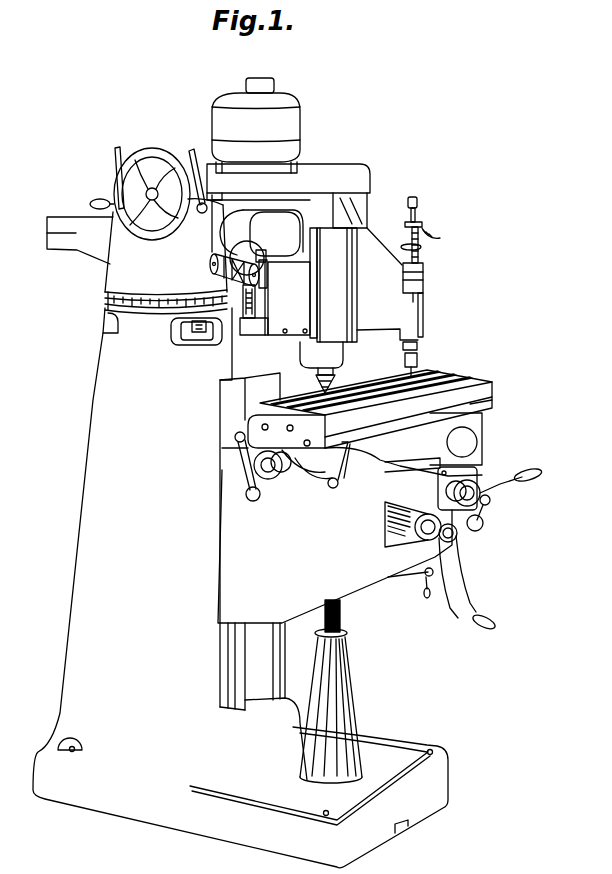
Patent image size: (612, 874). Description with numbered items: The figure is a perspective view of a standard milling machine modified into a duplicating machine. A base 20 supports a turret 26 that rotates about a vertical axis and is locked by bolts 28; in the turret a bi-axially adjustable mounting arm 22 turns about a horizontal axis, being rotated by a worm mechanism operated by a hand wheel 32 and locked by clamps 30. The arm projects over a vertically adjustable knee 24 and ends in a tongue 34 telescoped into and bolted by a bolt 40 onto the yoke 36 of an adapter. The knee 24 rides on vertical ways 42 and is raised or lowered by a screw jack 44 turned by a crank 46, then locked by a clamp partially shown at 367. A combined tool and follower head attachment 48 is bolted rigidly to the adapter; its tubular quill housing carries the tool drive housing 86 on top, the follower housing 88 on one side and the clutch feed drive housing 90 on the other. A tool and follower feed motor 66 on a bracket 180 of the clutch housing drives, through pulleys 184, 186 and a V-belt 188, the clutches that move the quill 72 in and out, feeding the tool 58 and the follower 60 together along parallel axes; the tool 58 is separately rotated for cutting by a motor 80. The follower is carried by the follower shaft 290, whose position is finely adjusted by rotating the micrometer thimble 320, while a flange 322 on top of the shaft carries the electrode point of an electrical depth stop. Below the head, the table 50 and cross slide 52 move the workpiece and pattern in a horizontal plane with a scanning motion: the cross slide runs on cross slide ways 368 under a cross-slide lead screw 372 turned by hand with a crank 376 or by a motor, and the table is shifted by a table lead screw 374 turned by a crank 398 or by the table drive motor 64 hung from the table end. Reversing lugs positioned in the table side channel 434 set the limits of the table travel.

The base 20 is at (88, 437).
The mounting arm 22 is at (250, 220).
The knee 24 is at (362, 578).
The turret 26 is at (110, 266).
The bolts 28 is at (197, 334).
The clamps 30 is at (115, 150).
The hand wheel 32 is at (147, 148).
The tongue 34 is at (318, 212).
The yoke 36 is at (261, 254).
The bolt 40 is at (280, 208).
The ways 42 is at (230, 652).
The screw jack 44 is at (345, 627).
The crank 46 is at (472, 604).
The tool and follower head attachment 48 is at (393, 216).
The table 50 is at (462, 378).
The cross slide 52 is at (356, 490).
The tool 58 is at (328, 383).
The follower 60 is at (418, 370).
The table drive motor 64 is at (490, 460).
The tool and follower feed motor 66 is at (240, 244).
The quill 72 is at (343, 356).
The tool drive motor 80 is at (300, 96).
The tool drive housing 86 is at (345, 164).
The follower housing 88 is at (364, 285).
The clutch feed drive housing 90 is at (285, 336).
The bracket 180 is at (230, 340).
The pulley 184 is at (211, 264).
The pulley 186 is at (220, 284).
The V-belt 188 is at (247, 252).
The follower shaft 290 is at (425, 266).
The micrometer thimble 320 is at (418, 201).
The flange 322 is at (423, 224).
The clamp 367 is at (432, 600).
The cross slide ways 368 is at (397, 492).
The cross-slide lead screw 372 is at (492, 506).
The table lead screw 374 is at (247, 466).
The crank 376 is at (500, 490).
The crank 398 is at (235, 436).
The table side channel 434 is at (494, 400).